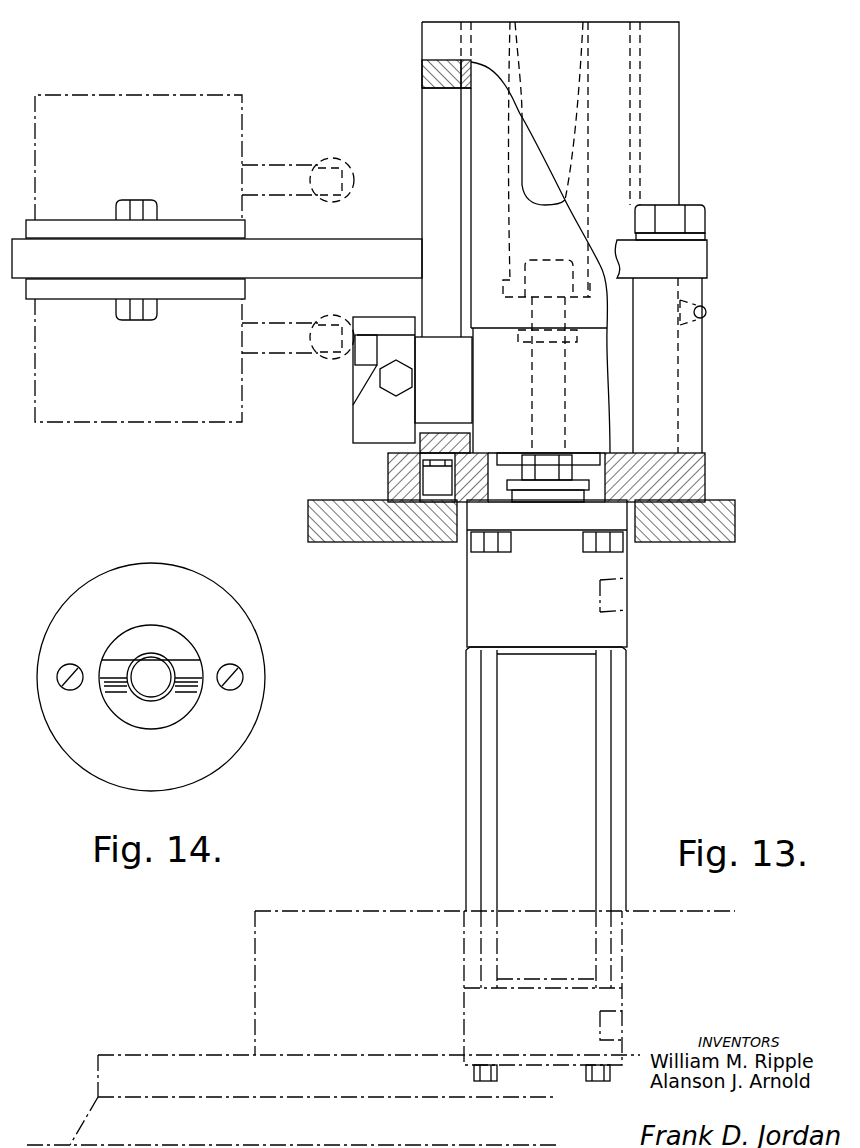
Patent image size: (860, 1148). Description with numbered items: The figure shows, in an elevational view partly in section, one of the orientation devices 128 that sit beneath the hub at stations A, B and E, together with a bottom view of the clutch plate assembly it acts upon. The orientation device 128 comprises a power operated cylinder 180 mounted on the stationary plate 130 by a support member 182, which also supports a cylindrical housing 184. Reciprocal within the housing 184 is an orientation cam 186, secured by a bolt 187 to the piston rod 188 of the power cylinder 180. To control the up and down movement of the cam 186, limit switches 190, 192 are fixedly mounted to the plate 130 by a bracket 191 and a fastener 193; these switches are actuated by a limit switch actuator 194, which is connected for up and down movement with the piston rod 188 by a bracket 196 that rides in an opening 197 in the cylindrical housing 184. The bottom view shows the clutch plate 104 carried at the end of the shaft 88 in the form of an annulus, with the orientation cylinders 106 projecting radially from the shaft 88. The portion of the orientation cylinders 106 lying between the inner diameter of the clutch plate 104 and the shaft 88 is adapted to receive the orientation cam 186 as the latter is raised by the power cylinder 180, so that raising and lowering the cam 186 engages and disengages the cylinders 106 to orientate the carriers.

In FIG. 13, the orientation device 128 is at (712, 130).
In FIG. 13, the cylindrical housing 184 is at (422, 73).
In FIG. 13, the opening 197 is at (440, 88).
In FIG. 13, the orientation cam 186 is at (525, 135).
In FIG. 13, the bolt 187 is at (548, 258).
In FIG. 13, the piston rod 188 is at (528, 410).
In FIG. 13, the fastener 193 is at (705, 226).
In FIG. 13, the bracket 196 is at (437, 337).
In FIG. 13, the limit switch actuator 194 is at (353, 415).
In FIG. 13, the support member 182 is at (388, 478).
In FIG. 13, the stationary plate 130 is at (375, 545).
In FIG. 13, the power operated cylinder 180 is at (466, 752).
In FIG. 13, the limit switch 190 is at (242, 147).
In FIG. 13, the bracket 191 is at (365, 238).
In FIG. 13, the limit switch 192 is at (240, 363).
In FIG. 14, the clutch plate 104 is at (213, 583).
In FIG. 14, the shaft 88 is at (135, 700).
In FIG. 14, the orientation cylinder 106 is at (183, 698).